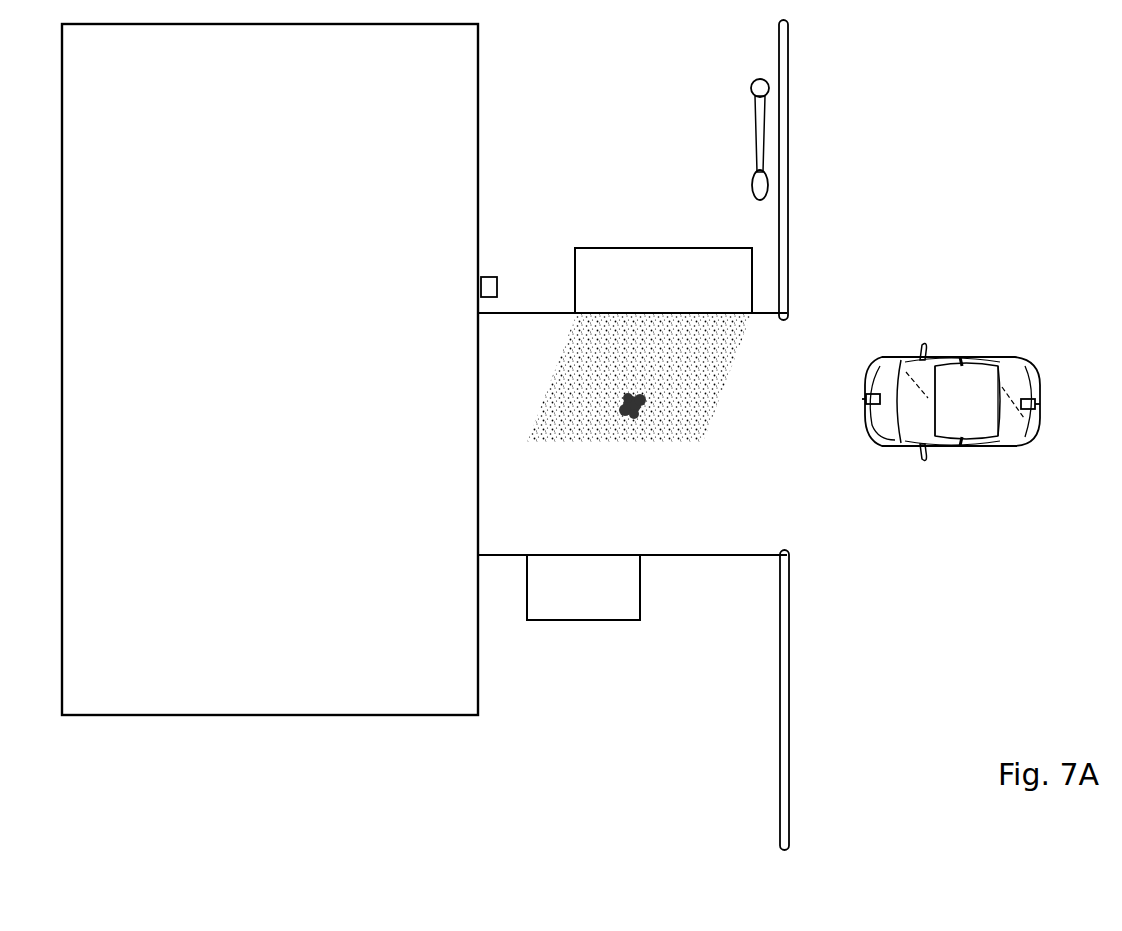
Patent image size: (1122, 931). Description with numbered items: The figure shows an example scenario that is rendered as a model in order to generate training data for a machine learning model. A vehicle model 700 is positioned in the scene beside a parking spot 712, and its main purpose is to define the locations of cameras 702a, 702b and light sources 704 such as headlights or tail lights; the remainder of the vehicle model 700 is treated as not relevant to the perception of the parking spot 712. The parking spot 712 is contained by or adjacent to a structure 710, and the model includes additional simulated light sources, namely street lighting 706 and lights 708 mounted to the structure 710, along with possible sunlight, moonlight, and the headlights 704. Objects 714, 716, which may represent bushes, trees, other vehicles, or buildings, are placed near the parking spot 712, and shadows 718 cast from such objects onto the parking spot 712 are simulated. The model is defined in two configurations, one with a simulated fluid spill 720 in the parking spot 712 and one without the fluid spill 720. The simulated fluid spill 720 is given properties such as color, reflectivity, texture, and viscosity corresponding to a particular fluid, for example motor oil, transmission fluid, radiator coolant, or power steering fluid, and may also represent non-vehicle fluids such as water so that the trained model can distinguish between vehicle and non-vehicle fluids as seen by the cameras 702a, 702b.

The vehicle model 700 is at (975, 402).
The camera 702a is at (870, 405).
The camera 702b is at (1035, 405).
The light source 704 is at (885, 365).
The street lighting 706 is at (753, 180).
The light 708 is at (489, 277).
The structure 710 is at (270, 369).
The parking spot 712 is at (633, 435).
The object 714 is at (663, 280).
The object 716 is at (583, 587).
The shadow 718 is at (576, 398).
The simulated fluid spill 720 is at (630, 411).